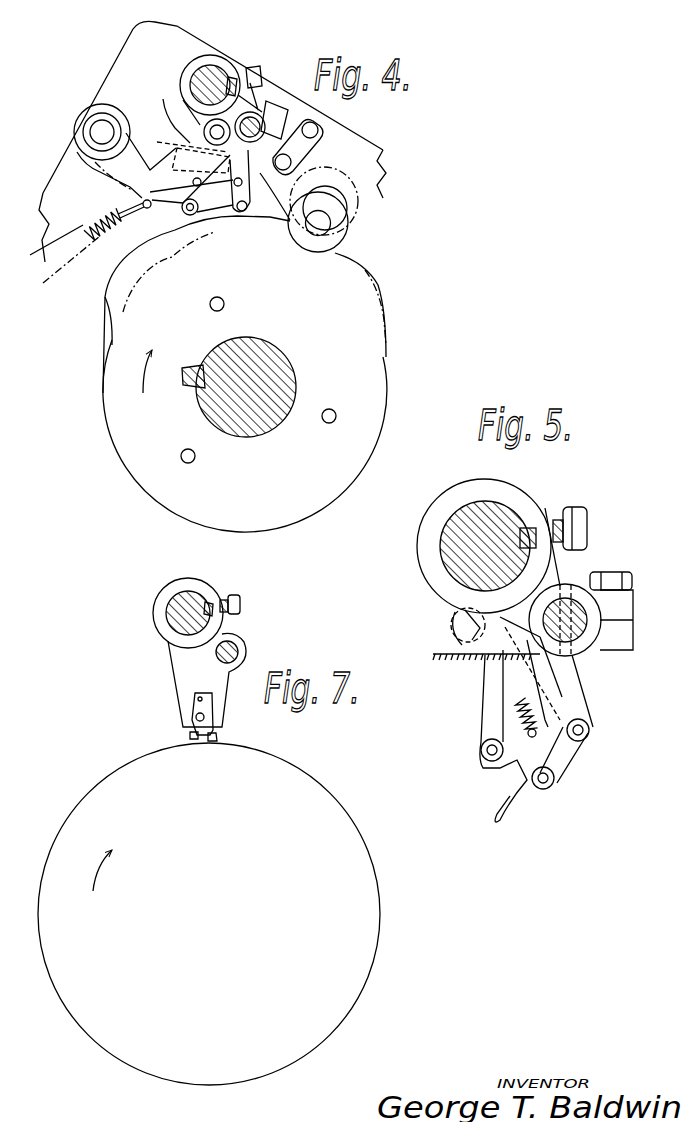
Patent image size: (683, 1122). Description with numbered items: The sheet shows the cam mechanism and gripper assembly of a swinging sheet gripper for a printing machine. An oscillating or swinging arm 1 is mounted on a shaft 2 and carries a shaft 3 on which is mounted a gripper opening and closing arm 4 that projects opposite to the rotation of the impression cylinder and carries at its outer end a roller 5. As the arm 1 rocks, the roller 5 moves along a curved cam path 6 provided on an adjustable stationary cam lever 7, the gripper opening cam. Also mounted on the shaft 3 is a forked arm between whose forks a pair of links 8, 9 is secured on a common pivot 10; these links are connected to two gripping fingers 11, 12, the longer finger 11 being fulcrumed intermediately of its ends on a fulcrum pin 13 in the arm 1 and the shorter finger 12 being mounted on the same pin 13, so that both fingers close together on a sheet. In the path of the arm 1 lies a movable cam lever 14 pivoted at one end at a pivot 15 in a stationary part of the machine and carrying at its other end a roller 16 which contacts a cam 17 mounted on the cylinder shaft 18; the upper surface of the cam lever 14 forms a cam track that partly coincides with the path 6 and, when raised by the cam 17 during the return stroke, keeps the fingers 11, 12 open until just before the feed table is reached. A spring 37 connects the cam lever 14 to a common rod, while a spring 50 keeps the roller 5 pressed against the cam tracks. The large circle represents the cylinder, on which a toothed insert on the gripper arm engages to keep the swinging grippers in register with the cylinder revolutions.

In FIG. 4, the oscillating or swinging arm 1 is at (250, 84).
In FIG. 5, the oscillating or swinging arm 1 is at (555, 575).
In FIG. 7, the oscillating or swinging arm 1 is at (207, 680).
In FIG. 4, the shaft 2 is at (212, 83).
In FIG. 5, the shaft 2 is at (485, 547).
In FIG. 7, the shaft 2 is at (185, 613).
In FIG. 4, the shaft 3 is at (263, 120).
In FIG. 5, the shaft 3 is at (575, 612).
In FIG. 5, the gripper opening and closing arm 4 is at (475, 636).
In FIG. 4, the roller 5 is at (228, 76).
In FIG. 5, the roller 5 is at (462, 632).
In FIG. 4, the curved cam path 6 is at (175, 133).
In FIG. 4, the cam lever 7 is at (287, 143).
In FIG. 5, the link 8 is at (495, 714).
In FIG. 5, the link 9 is at (560, 702).
In FIG. 5, the pivot 10 is at (536, 574).
In FIG. 5, the gripper finger 11 is at (565, 752).
In FIG. 5, the gripper finger 12 is at (512, 775).
In FIG. 5, the fulcrum pin 13 is at (548, 782).
In FIG. 4, the cam lever 14 is at (126, 165).
In FIG. 4, the pivot 15 is at (102, 132).
In FIG. 7, the pivot 15 is at (192, 703).
In FIG. 4, the roller 16 is at (358, 207).
In FIG. 7, the roller 16 is at (190, 735).
In FIG. 4, the cam 17 is at (370, 273).
In FIG. 7, the cam 17 is at (213, 741).
In FIG. 4, the impression or blanket cylinder shaft 18 is at (245, 414).
In FIG. 4, the spring 37 is at (90, 254).
In FIG. 5, the spring 50 is at (488, 663).